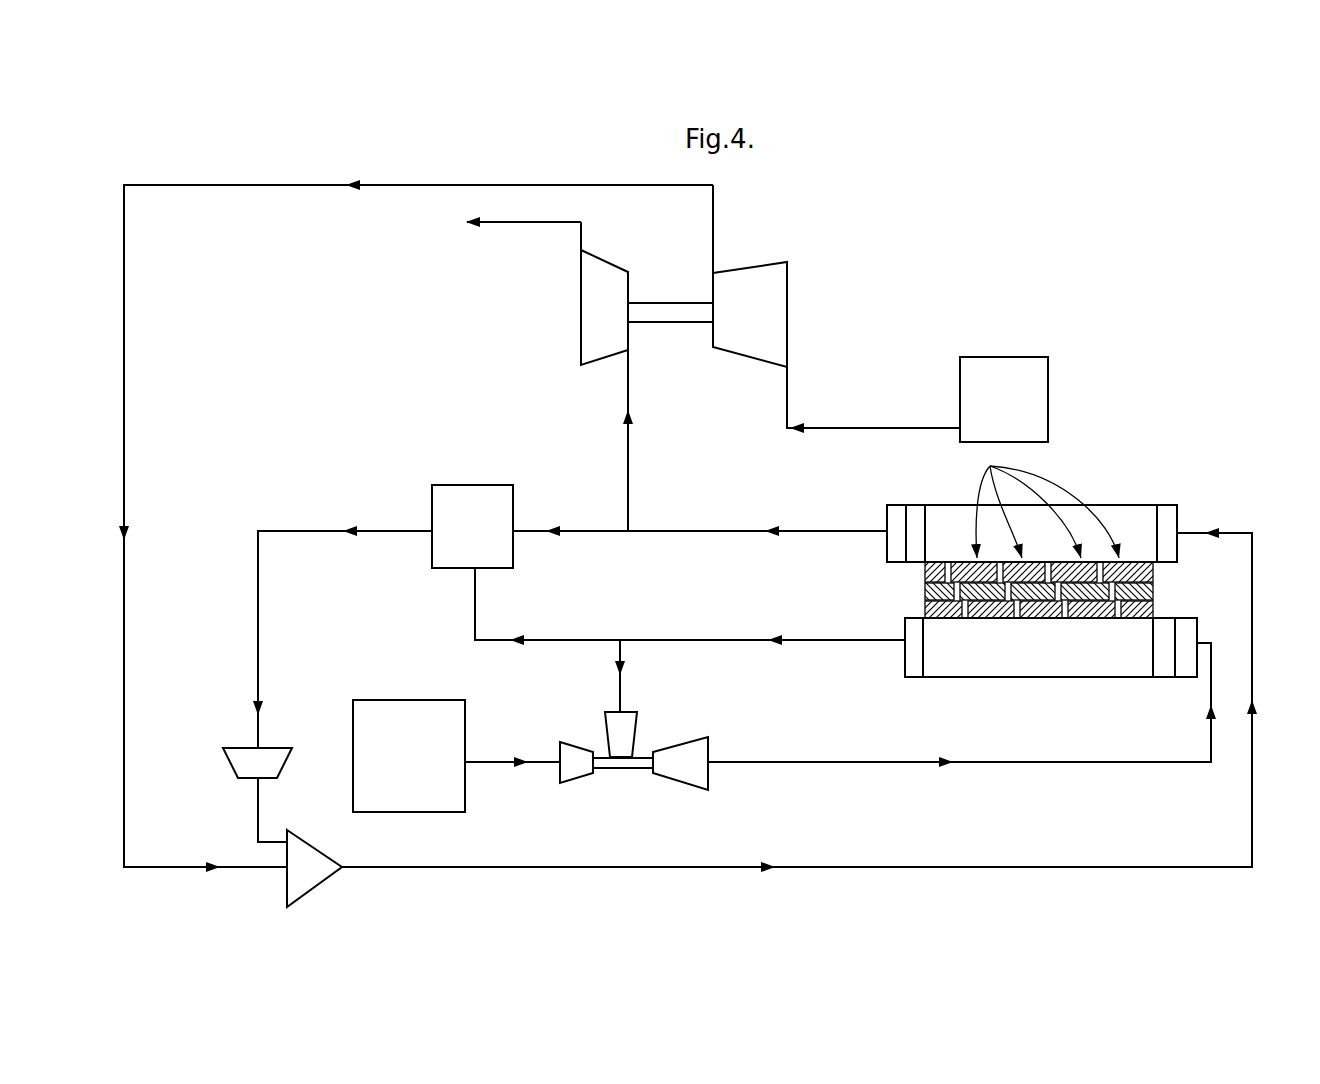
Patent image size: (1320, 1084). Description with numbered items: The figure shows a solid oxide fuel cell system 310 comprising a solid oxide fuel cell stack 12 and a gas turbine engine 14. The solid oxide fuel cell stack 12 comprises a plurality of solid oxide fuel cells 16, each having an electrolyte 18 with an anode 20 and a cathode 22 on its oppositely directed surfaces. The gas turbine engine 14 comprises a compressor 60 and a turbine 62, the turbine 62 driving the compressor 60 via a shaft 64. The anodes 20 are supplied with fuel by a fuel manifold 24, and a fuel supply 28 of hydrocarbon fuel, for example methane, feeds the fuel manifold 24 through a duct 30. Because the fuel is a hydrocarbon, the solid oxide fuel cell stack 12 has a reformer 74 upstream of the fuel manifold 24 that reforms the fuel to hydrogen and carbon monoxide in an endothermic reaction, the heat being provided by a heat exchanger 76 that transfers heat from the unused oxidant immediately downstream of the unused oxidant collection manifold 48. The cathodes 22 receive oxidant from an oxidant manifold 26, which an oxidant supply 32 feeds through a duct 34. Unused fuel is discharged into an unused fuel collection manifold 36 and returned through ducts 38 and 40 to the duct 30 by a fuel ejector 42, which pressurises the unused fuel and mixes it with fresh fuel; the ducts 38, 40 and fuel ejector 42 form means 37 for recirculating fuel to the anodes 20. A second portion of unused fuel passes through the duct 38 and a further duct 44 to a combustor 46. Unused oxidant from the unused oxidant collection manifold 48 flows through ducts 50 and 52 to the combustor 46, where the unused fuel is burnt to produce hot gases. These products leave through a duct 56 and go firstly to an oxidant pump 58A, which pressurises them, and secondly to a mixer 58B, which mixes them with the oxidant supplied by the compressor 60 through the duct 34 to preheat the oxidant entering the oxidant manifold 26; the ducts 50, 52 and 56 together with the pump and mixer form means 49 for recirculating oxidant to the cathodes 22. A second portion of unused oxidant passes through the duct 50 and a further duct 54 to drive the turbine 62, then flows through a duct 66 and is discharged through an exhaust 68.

The solid oxide fuel cell stack 12 is at (1057, 586).
The gas turbine engine 14 is at (702, 372).
The solid oxide fuel cells 16 is at (1044, 498).
The electrolyte 18 is at (925, 592).
The anode 20 is at (925, 610).
The cathode 22 is at (925, 568).
The fuel manifold 24 is at (1165, 666).
The oxidant manifold 26 is at (1170, 520).
The fuel supply 28 is at (405, 713).
The duct 30 is at (505, 763).
The oxidant supply 32 is at (1035, 402).
The duct 34 is at (303, 188).
The unused fuel collection manifold 36 is at (908, 655).
The means to supply unused fuel 37 is at (792, 708).
The duct 38 is at (745, 641).
The duct 40 is at (622, 680).
The fuel ejector 42 is at (622, 769).
The duct 44 is at (528, 640).
The combustor 46 is at (445, 485).
The unused oxidant collection manifold 48 is at (915, 518).
The means to supply unused oxidant 49 is at (370, 498).
The duct 50 is at (760, 532).
The duct 52 is at (585, 532).
The duct 54 is at (630, 478).
The duct 56 is at (259, 645).
The oxidant pump 58A is at (240, 762).
The mixer 58B is at (325, 880).
The compressor 60 is at (762, 265).
The turbine 62 is at (592, 366).
The shaft 64 is at (672, 304).
The duct 66 is at (518, 224).
The exhaust 68 is at (468, 226).
The reformer 74 is at (1185, 634).
The heat exchanger 76 is at (888, 521).
The solid oxide fuel cell system 310 is at (1027, 328).